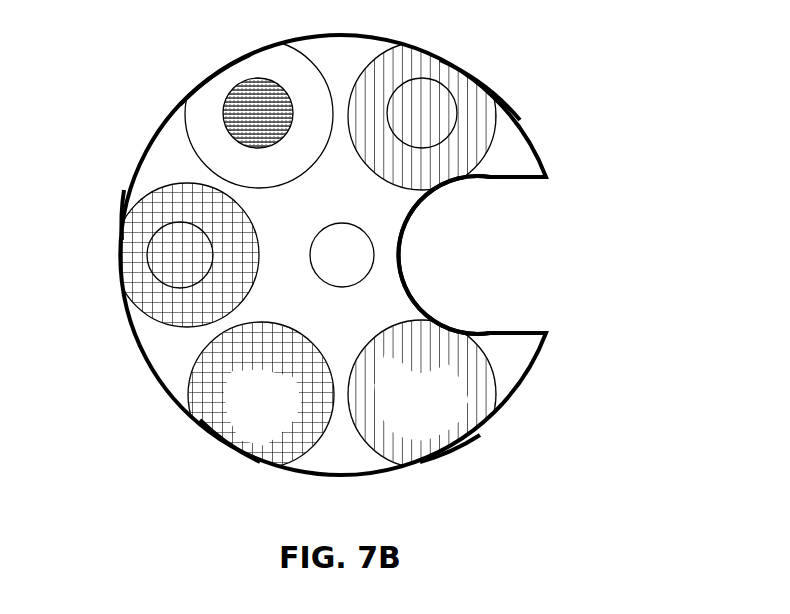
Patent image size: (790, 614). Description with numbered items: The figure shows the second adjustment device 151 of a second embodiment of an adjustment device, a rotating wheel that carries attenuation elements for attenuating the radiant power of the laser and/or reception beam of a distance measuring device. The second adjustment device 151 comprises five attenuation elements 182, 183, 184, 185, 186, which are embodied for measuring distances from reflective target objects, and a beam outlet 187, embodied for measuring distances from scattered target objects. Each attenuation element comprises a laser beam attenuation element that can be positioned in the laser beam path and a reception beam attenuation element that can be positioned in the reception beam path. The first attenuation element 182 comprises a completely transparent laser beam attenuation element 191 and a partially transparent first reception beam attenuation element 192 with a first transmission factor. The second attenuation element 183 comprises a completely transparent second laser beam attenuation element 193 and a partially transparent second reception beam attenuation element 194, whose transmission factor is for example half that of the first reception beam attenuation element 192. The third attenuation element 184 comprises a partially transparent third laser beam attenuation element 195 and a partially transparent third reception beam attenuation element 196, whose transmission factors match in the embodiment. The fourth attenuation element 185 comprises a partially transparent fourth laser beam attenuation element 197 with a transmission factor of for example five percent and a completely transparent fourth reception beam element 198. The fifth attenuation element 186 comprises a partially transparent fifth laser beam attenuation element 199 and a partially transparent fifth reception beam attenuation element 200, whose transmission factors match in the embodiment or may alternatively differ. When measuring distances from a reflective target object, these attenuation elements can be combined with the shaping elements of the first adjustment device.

The second adjustment device 151 is at (642, 128).
The first attenuation element 182 is at (466, 458).
The second attenuation element 183 is at (233, 458).
The third attenuation element 184 is at (106, 215).
The fourth attenuation element 185 is at (207, 81).
The fifth attenuation element 186 is at (477, 68).
The beam outlet 187 is at (516, 258).
The laser beam attenuation element 191 is at (418, 377).
The first reception beam attenuation element 192 is at (476, 407).
The second laser beam attenuation element 193 is at (265, 375).
The second reception beam attenuation element 194 is at (190, 408).
The third laser beam attenuation element 195 is at (260, 255).
The third reception beam attenuation element 196 is at (120, 265).
The fourth laser beam attenuation element 197 is at (273, 148).
The fourth reception beam element 198 is at (208, 112).
The fifth laser beam attenuation element 199 is at (414, 148).
The fifth reception beam attenuation element 200 is at (478, 112).